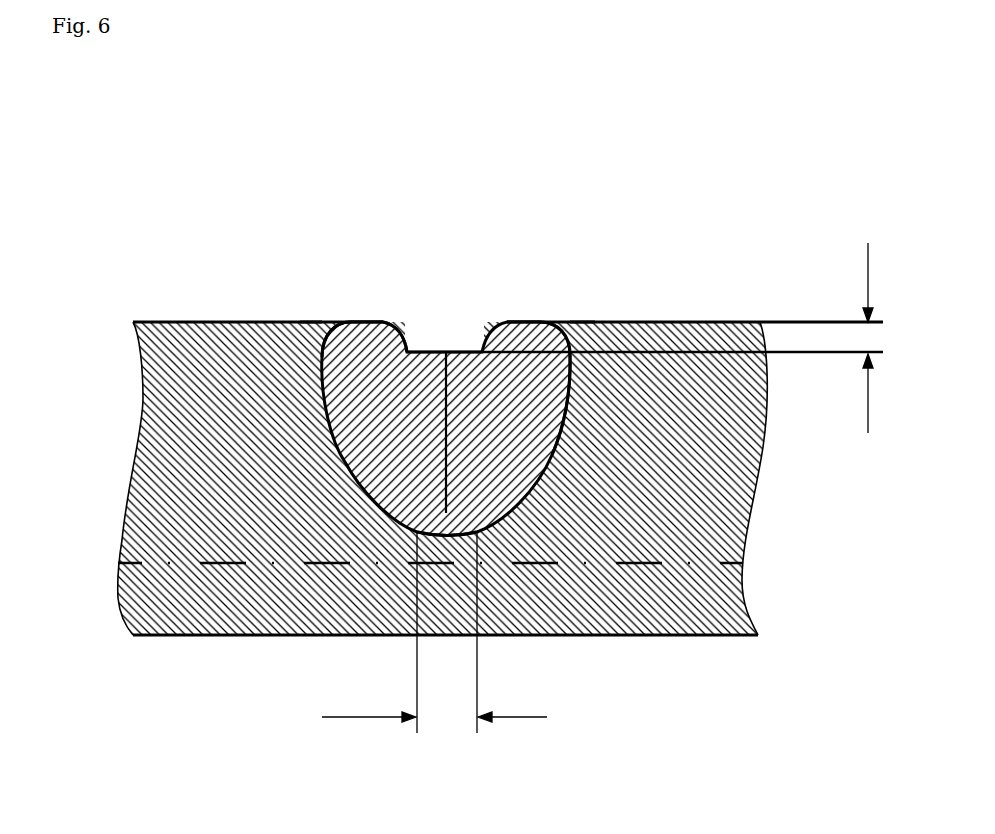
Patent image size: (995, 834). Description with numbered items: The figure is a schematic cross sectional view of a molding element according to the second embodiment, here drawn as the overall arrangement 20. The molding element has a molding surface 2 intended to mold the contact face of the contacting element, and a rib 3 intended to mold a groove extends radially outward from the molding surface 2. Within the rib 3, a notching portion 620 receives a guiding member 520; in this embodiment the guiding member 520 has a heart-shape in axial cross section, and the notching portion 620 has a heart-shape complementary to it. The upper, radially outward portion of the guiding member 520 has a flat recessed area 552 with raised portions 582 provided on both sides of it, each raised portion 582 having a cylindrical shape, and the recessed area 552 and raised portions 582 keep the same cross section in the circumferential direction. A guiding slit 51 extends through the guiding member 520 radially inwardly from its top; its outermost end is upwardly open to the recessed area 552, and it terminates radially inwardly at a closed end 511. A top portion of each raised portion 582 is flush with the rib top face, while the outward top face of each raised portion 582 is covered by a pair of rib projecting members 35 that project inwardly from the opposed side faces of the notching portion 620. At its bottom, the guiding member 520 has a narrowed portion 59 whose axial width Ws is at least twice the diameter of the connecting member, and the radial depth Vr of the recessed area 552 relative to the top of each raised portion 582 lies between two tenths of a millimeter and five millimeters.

The welded joint structure 20 is at (177, 203).
The molding surface 2 is at (720, 563).
The rib 3 is at (682, 327).
The guiding slit 51 is at (450, 347).
The closed end 511 is at (446, 513).
The guiding member 520 is at (415, 351).
The flat recessed area 552 is at (435, 343).
The raised portion 582 is at (385, 343).
The rib projecting member 35 is at (325, 332).
The notching portion 620 is at (553, 420).
The narrowed portion 59 is at (417, 532).